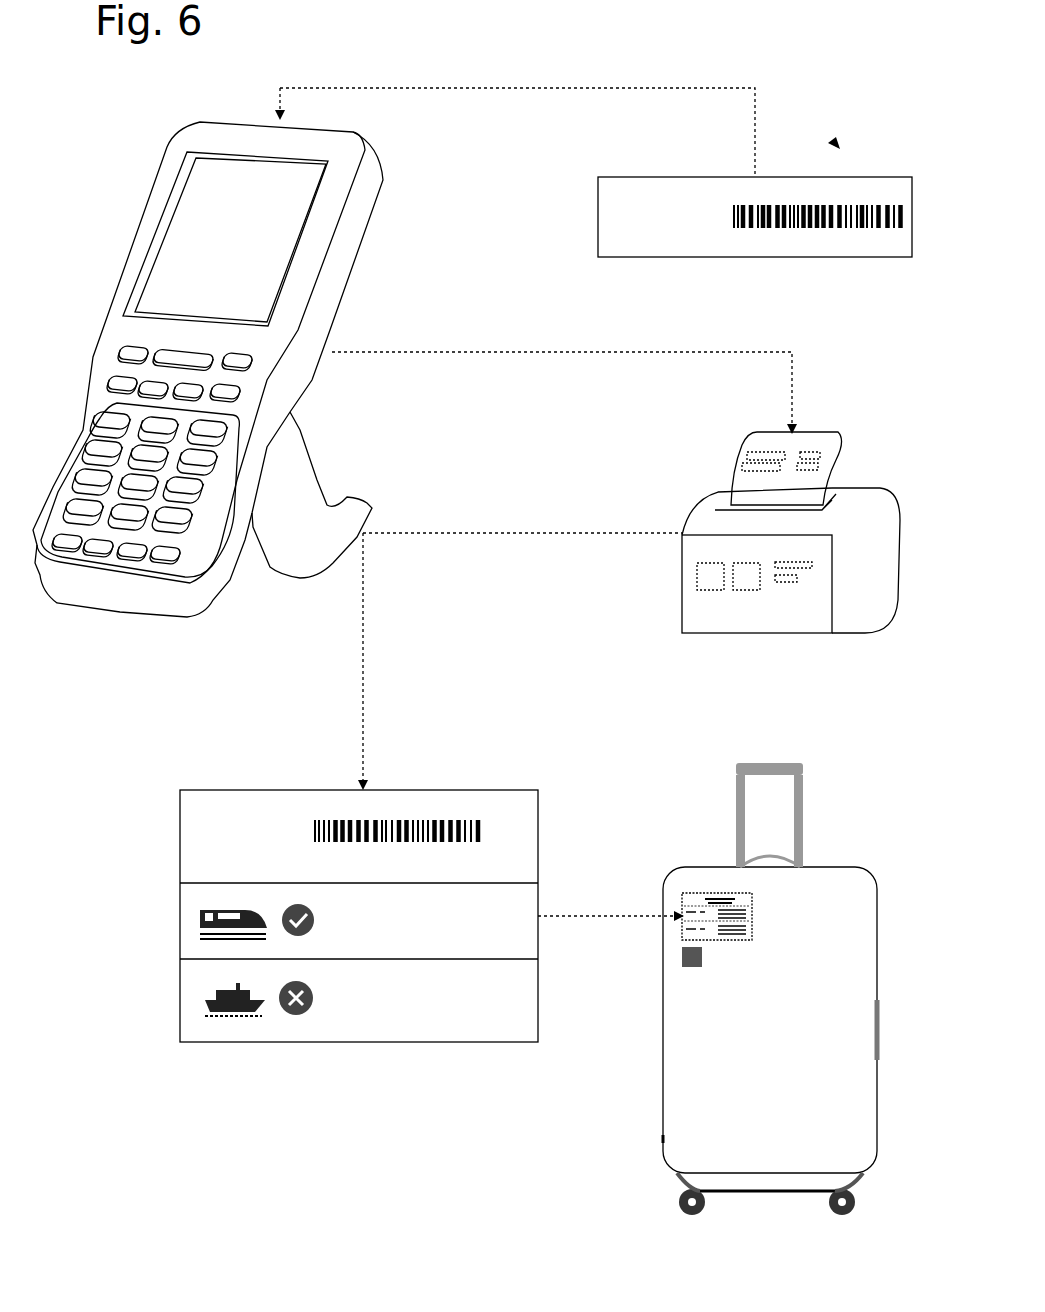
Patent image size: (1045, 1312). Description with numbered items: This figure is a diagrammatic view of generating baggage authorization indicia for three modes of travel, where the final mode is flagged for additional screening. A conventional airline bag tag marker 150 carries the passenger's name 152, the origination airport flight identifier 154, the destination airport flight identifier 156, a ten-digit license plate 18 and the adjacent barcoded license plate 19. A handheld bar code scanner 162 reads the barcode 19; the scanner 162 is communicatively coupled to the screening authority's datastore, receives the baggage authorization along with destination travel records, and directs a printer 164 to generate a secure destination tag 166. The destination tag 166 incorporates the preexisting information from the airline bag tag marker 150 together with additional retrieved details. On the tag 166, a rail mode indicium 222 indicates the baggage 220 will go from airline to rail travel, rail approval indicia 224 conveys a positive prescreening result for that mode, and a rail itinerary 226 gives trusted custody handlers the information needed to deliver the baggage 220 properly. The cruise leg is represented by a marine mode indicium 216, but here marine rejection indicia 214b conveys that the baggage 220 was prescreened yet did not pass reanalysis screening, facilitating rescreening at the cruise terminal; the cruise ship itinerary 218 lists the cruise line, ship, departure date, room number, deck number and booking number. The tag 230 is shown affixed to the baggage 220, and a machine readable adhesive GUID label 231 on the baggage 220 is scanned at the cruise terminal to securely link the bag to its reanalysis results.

The bar code scanner 162 is at (386, 182).
The airline bag tag marker 150 is at (746, 204).
The passenger's name 152 is at (597, 197).
The origination airport flight identifier 154 is at (604, 231).
The destination airport flight identifier 156 is at (680, 252).
The license plate 18 is at (752, 250).
The barcoded license plate 19 is at (902, 218).
The printer 164 is at (862, 470).
The secure destination tag 166 is at (341, 911).
The rail mode indicium 222 is at (196, 918).
The rail approval indicia 224 is at (284, 930).
The rail itinerary 226 is at (362, 916).
The marine mode indicium 216 is at (200, 1007).
The marine rejection indicia 214b is at (293, 1016).
The cruise ship itinerary 218 is at (383, 1010).
The baggage 220 is at (770, 989).
The bag tag label on luggage 230 is at (752, 928).
The GUID label 231 is at (704, 968).